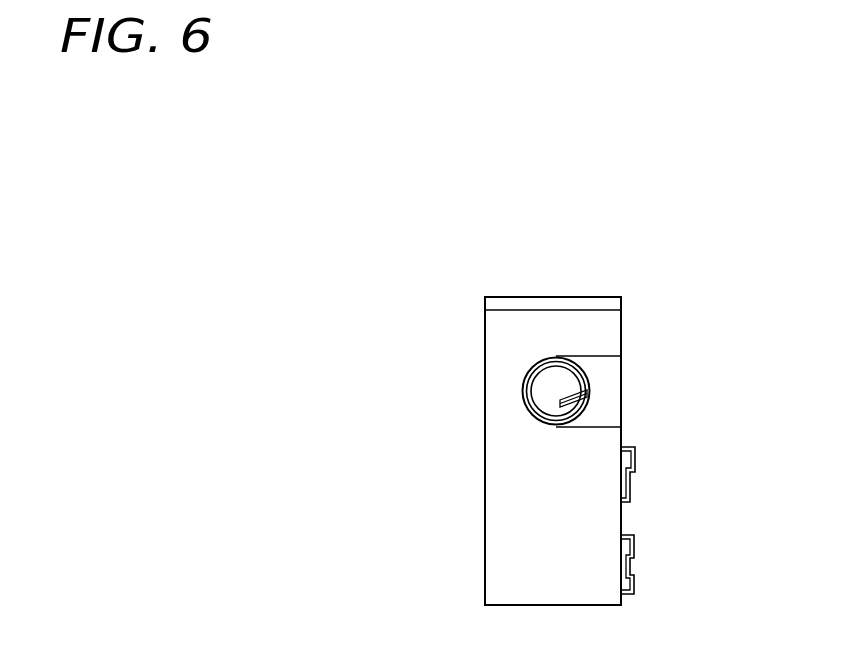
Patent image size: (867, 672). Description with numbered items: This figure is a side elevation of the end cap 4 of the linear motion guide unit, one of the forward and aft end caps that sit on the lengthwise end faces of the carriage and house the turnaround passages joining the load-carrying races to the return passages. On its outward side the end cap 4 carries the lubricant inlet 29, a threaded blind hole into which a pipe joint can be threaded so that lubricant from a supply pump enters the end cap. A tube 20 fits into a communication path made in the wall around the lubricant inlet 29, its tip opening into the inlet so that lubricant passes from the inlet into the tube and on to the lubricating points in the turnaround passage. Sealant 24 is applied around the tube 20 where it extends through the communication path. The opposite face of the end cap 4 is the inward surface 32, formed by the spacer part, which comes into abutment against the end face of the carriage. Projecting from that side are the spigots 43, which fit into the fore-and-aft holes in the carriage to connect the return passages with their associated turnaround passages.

The end cap 4 is at (637, 327).
The lubricant inlet 29 is at (567, 367).
The tube 20 is at (548, 418).
The inward surface 32 is at (621, 436).
The sealant 24 is at (548, 418).
The spigot 43 is at (632, 494).